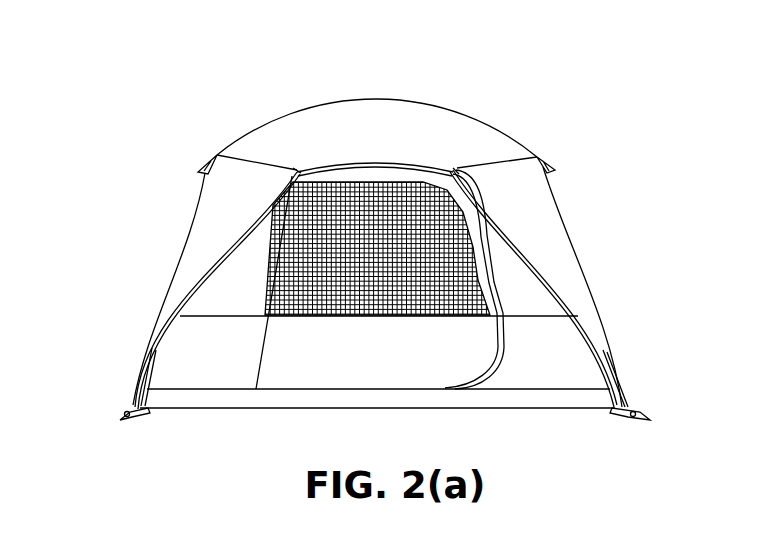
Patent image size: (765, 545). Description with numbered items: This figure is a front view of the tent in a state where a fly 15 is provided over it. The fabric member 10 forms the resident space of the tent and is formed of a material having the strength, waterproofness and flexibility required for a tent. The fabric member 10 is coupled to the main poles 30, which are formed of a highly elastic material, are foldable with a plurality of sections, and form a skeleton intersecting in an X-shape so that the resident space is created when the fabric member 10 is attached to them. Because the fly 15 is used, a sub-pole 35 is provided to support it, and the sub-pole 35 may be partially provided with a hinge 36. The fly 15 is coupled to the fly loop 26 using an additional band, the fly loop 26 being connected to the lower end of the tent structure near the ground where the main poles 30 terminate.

The fabric member 10 is at (350, 359).
The fly 15 is at (327, 102).
The fly loop 26 is at (117, 412).
The main pole 30 is at (137, 378).
The sub-pole 35 is at (374, 165).
The hinge 36 is at (293, 168).